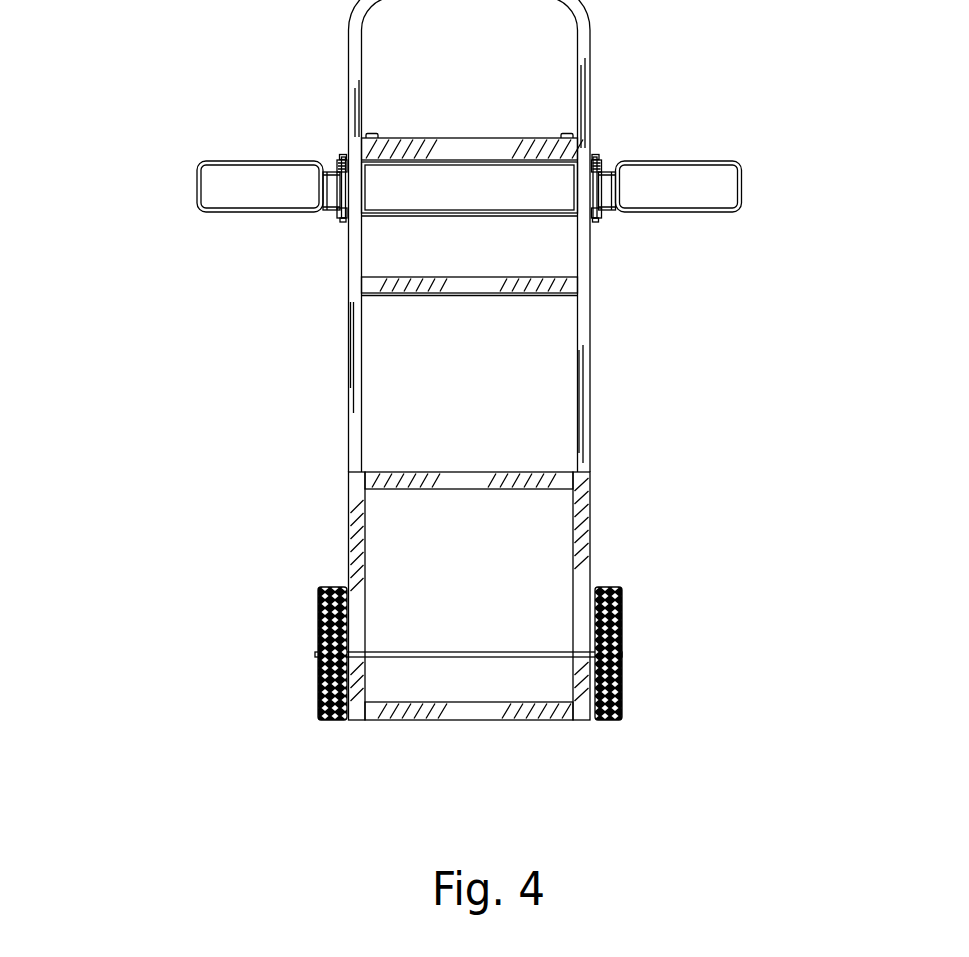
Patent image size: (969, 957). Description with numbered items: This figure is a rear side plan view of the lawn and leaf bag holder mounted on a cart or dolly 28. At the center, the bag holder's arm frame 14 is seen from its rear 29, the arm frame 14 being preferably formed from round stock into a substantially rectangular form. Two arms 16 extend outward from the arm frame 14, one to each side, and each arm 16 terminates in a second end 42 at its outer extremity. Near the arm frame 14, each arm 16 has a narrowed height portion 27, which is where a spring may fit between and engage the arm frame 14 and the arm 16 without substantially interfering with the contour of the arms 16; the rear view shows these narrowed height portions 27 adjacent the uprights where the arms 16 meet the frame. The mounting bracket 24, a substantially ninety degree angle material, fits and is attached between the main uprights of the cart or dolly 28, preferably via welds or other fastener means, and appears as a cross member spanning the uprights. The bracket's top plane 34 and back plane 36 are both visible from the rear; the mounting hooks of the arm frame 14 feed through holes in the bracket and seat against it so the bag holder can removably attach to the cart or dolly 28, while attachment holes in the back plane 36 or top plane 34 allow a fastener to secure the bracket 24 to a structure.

The arm frame 14 is at (470, 244).
The rear of arm frame 29 is at (413, 216).
The mounting bracket 24 is at (473, 117).
The top plane 34 is at (447, 138).
The back plane 36 is at (453, 151).
The arm 16 is at (460, 179).
The second end 42 is at (197, 187).
The narrowed height portion 27 is at (338, 214).
The cart or dolly 28 is at (585, 530).